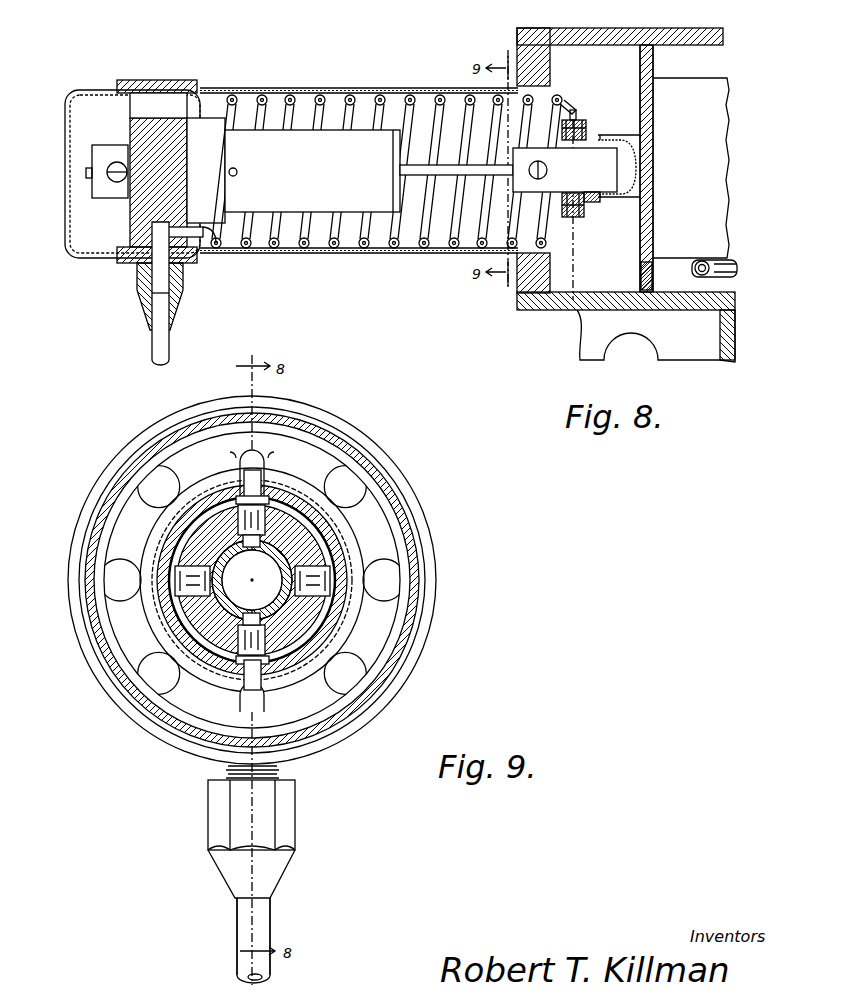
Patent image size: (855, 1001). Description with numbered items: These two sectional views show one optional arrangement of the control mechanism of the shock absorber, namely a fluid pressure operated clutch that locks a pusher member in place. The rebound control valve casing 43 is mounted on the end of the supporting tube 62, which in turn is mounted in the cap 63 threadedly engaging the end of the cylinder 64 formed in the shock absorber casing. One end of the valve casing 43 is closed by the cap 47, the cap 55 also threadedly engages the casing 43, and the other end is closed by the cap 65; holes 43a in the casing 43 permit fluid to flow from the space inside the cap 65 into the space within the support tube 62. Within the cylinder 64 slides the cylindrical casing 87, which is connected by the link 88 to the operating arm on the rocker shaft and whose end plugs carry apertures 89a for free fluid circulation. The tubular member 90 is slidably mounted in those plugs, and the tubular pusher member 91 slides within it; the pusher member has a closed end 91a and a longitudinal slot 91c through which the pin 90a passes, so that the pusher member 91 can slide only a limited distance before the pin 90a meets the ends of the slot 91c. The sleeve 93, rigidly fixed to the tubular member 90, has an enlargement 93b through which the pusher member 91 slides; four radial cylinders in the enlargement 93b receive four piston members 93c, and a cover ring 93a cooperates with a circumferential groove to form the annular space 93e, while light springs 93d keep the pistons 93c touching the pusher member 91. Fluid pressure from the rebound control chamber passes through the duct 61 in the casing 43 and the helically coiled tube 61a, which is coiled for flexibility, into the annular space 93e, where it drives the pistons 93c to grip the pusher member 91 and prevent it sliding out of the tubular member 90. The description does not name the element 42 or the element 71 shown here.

In FIG. 8, the shaft 42 is at (158, 352).
In FIG. 9, the shaft 42 is at (250, 932).
In FIG. 8, the rebound control valve casing 43 is at (150, 84).
In FIG. 9, the rebound control valve casing 43 is at (70, 512).
In FIG. 8, the holes 43a is at (142, 105).
In FIG. 9, the holes 43a is at (105, 576).
In FIG. 8, the cap 47 is at (108, 196).
In FIG. 8, the cap 55 is at (222, 248).
In FIG. 9, the cap 55 is at (130, 598).
In FIG. 8, the duct 61 is at (158, 232).
In FIG. 8, the helically coiled tube 61a is at (368, 243).
In FIG. 9, the helically coiled tube 61a is at (183, 453).
In FIG. 8, the supporting tube 62 is at (408, 88).
In FIG. 9, the supporting tube 62 is at (118, 468).
In FIG. 8, the cap 63 is at (520, 56).
In FIG. 8, the cylinder 64 is at (606, 36).
In FIG. 8, the piston block 71 is at (302, 240).
In FIG. 8, the cylindrical casing 87 is at (702, 80).
In FIG. 8, the link 88 is at (738, 268).
In FIG. 8, the apertures 89a is at (640, 274).
In FIG. 8, the tubular member 90 is at (630, 166).
In FIG. 8, the rivets or pins 90a is at (592, 202).
In FIG. 8, the tubular pusher member 91 is at (605, 182).
In FIG. 9, the tubular pusher member 91 is at (236, 600).
In FIG. 8, the closed end 91a is at (512, 180).
In FIG. 9, the longitudinal slot 91c is at (177, 733).
In FIG. 8, the sleeve 93 is at (648, 118).
In FIG. 8, the cover ring 93a is at (574, 114).
In FIG. 9, the cover ring 93a is at (340, 627).
In FIG. 8, the enlargement 93b is at (582, 128).
In FIG. 9, the enlargement 93b is at (293, 527).
In FIG. 8, the piston members 93c is at (556, 210).
In FIG. 9, the piston members 93c is at (330, 543).
In FIG. 9, the light springs 93d is at (340, 572).
In FIG. 9, the annular space 93e is at (350, 665).
In FIG. 8, the cap 65 is at (78, 97).